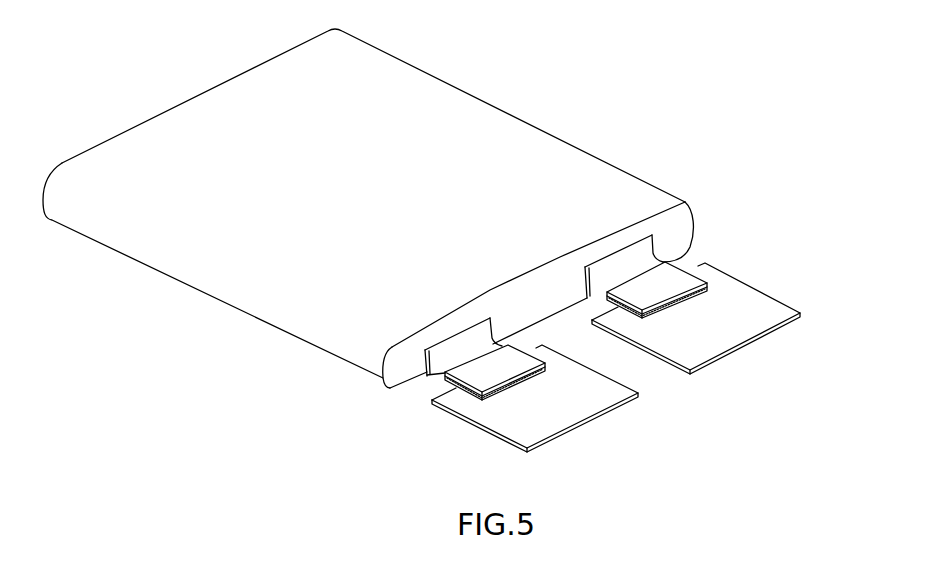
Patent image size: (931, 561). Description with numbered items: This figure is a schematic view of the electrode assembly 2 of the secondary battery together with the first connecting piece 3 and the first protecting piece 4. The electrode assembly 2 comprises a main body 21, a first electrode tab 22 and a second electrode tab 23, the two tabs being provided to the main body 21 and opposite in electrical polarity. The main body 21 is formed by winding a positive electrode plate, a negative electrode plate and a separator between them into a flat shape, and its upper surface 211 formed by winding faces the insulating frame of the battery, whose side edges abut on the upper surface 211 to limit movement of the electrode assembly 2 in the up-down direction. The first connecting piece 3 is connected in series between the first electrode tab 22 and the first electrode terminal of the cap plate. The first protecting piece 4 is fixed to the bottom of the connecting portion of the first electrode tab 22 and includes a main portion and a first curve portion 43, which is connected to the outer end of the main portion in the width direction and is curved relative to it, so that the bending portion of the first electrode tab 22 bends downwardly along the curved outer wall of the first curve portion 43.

The electrode assembly 2 is at (165, 62).
The main body 21 is at (478, 130).
The upper surface 211 is at (527, 288).
The first electrode tab 22 is at (444, 360).
The second electrode tab 23 is at (634, 252).
The first connecting piece 3 is at (602, 408).
The first protecting piece 4 is at (508, 363).
The first curve portion 43 is at (430, 377).